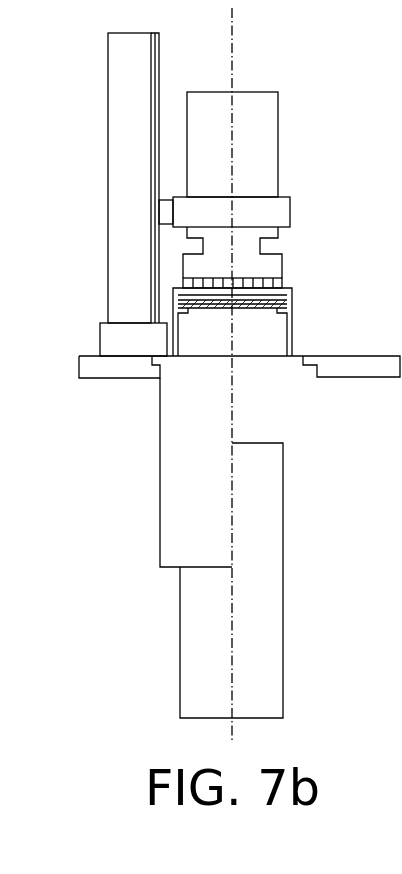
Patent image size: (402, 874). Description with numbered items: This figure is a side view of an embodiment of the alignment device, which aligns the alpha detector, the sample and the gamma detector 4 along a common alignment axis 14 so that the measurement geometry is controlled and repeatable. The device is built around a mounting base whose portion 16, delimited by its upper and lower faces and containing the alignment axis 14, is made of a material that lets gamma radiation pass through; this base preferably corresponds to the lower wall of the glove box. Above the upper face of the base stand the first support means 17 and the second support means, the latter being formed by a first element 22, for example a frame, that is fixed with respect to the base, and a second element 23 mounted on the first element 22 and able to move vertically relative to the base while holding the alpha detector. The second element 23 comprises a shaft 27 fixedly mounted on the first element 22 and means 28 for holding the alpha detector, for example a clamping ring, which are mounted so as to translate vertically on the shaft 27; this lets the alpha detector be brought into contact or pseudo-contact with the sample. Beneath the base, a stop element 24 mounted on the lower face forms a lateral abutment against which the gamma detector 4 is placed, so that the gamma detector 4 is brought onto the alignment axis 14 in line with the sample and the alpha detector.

The gamma detector 4 is at (192, 652).
The alignment axis 14 is at (232, 42).
The portion of the mounting base 16 is at (263, 368).
The first support means 17 is at (328, 288).
The first element 22 is at (100, 343).
The second element 23 is at (95, 33).
The stop element 24 is at (173, 483).
The shaft 27 is at (136, 83).
The means for holding the alpha detector 28 is at (277, 210).